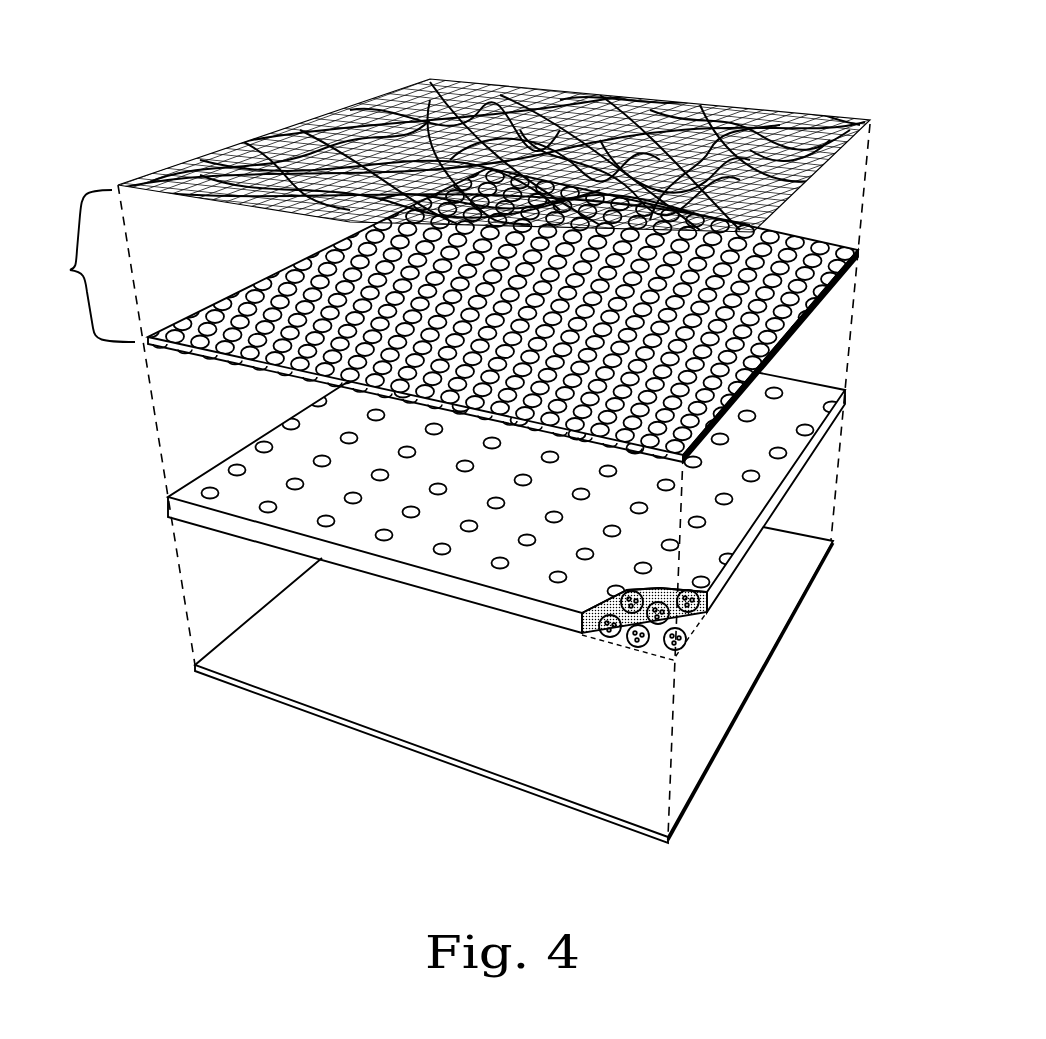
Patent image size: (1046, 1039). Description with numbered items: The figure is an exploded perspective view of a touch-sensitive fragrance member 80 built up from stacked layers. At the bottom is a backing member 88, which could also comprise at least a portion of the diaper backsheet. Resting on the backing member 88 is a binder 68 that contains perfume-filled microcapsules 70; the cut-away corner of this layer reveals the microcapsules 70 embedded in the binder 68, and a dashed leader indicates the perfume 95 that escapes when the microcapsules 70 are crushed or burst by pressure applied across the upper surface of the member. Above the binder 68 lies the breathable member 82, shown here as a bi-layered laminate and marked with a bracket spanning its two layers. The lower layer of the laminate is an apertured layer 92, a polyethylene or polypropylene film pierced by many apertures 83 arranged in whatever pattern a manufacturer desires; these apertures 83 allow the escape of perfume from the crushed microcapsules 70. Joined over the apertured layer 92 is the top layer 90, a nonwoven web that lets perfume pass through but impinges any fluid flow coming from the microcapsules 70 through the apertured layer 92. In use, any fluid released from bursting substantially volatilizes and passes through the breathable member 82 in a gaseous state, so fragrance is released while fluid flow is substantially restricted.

The touch-sensitive fragrance member 80 is at (772, 68).
The breathable member 82 is at (82, 266).
The top layer 90 is at (322, 118).
The apertures 83 is at (298, 265).
The apertured layer 92 is at (822, 296).
The microcapsules 70 is at (328, 446).
The binder 68 is at (610, 606).
The perfume 95 is at (700, 615).
The backing member 88 is at (287, 683).